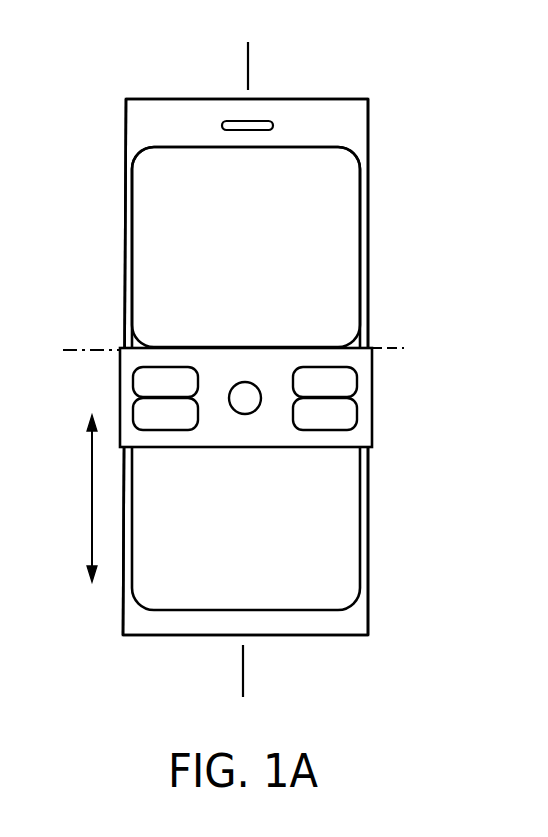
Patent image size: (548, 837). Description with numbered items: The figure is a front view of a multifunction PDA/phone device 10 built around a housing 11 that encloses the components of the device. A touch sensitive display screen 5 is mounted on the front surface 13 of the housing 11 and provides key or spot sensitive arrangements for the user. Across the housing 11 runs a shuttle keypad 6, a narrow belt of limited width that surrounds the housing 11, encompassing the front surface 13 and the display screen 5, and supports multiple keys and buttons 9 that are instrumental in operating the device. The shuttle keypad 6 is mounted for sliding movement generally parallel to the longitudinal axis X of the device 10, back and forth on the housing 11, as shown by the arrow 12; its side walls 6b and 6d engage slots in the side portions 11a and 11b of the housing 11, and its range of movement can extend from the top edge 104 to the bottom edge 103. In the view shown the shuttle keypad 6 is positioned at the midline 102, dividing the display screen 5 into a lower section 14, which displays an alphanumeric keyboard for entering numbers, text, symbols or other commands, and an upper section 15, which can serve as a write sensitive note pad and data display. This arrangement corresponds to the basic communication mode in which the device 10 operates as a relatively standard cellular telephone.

The touch sensitive display screen 5 is at (378, 176).
The shuttle keypad 6 is at (380, 369).
The side wall of shuttle keypad 6b is at (120, 390).
The side wall of shuttle keypad 6d is at (373, 425).
The keys and buttons 9 is at (340, 415).
The multifunction device 10 is at (428, 218).
The housing 11 is at (137, 93).
The side portion of housing 11a is at (125, 290).
The side portion of housing 11b is at (370, 277).
The arrow 12 is at (90, 502).
The front surface 13 is at (337, 107).
The keyboard section of display screen 14 is at (338, 500).
The note pad section of display screen 15 is at (148, 233).
The midline 102 is at (410, 344).
The bottom edge 103 is at (137, 637).
The top edge 104 is at (207, 98).
The longitudinal axis X is at (245, 369).